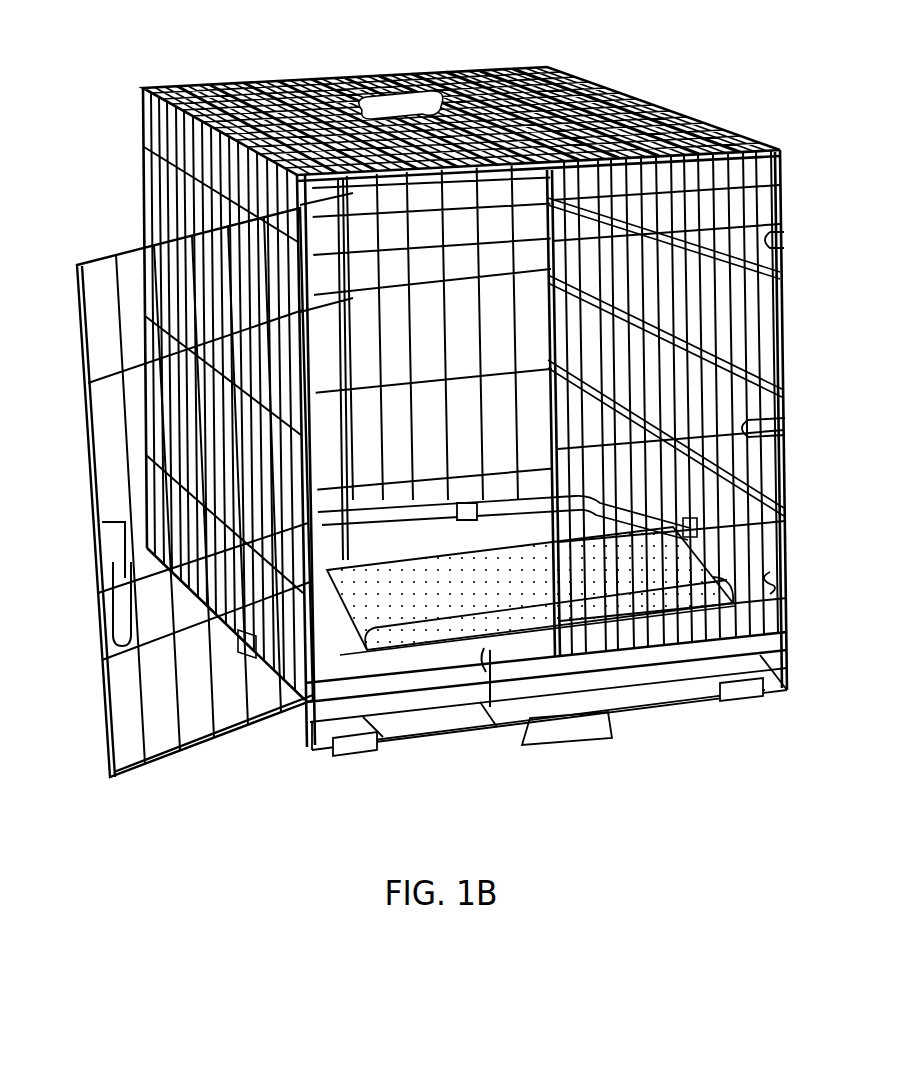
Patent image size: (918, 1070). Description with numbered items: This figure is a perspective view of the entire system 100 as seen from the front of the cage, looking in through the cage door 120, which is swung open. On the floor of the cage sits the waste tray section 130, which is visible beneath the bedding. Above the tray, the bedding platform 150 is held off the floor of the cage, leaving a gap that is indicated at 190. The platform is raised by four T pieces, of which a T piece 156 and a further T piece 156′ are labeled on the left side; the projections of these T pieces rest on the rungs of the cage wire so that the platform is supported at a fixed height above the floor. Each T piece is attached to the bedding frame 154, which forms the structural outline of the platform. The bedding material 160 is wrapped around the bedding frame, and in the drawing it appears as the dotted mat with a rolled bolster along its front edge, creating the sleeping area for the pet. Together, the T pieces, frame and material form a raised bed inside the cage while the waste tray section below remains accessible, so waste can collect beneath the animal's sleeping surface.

The system 100 is at (648, 62).
The cage door 120 is at (720, 322).
The waste tray section 130 is at (728, 665).
The bedding platform 150 is at (412, 654).
The bedding frame 154 is at (600, 625).
The T piece 156 is at (220, 582).
The T piece 156′ is at (267, 652).
The bedding material 160 is at (639, 579).
The space above the cage floor 190 is at (487, 655).